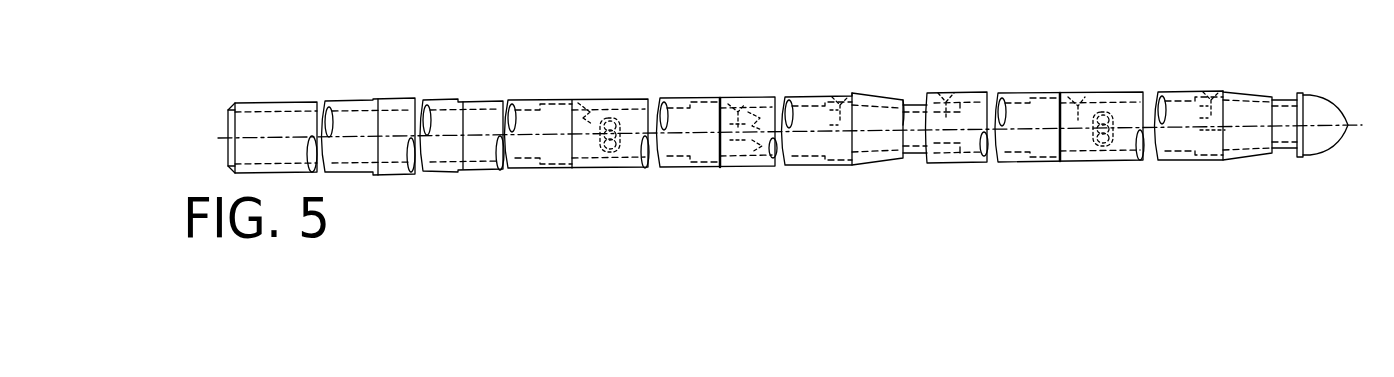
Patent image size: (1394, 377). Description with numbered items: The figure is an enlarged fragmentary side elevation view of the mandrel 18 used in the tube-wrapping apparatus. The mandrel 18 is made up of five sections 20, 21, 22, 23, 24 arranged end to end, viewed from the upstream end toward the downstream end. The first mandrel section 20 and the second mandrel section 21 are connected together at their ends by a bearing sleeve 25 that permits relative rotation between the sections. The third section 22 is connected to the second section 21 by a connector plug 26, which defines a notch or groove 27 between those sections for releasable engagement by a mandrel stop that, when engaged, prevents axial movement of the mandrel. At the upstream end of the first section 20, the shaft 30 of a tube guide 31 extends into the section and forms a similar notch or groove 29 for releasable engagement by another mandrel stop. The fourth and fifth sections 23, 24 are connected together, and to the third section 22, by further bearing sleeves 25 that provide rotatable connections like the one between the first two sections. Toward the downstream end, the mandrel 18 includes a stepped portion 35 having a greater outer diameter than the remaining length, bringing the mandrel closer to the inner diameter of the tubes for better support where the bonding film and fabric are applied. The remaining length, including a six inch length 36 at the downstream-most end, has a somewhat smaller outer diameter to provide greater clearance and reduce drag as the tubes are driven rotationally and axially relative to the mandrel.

The mandrel 18 is at (955, 37).
The first mandrel section 20 is at (1175, 92).
The second mandrel section 21 is at (963, 93).
The third mandrel section 22 is at (808, 97).
The fourth mandrel section 23 is at (677, 100).
The fifth mandrel section 24 is at (477, 102).
The bearing sleeve 25 is at (607, 103).
The connector plug 26 is at (890, 100).
The notch or groove 27 is at (912, 103).
The notch or groove 29 is at (1273, 113).
The shaft 30 is at (1282, 100).
The tube guide 31 is at (1327, 100).
The stepped portion 35 is at (392, 100).
The length at downstream-most end 36 is at (282, 103).